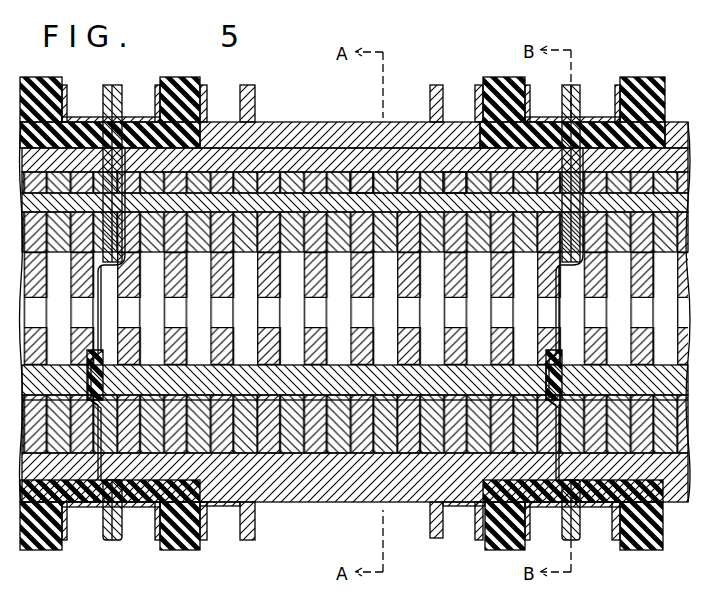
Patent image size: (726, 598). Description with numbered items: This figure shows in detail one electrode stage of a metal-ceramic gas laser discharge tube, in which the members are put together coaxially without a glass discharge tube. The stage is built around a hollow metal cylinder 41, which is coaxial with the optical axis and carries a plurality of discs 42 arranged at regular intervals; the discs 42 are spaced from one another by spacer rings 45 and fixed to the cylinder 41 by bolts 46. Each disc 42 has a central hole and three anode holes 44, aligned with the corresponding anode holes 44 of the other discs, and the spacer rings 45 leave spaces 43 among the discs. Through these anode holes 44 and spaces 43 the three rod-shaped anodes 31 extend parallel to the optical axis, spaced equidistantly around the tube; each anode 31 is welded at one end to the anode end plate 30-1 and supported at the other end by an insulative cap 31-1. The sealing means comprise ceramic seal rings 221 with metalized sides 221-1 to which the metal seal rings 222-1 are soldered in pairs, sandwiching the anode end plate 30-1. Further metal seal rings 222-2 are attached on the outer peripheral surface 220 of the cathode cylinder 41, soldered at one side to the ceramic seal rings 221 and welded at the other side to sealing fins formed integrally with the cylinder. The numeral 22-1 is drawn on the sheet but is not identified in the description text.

The through-hole conductor (via) 22-1 is at (130, 114).
The bolt 46 is at (217, 195).
The hollow metal cylinder 41 is at (360, 126).
The ceramic seal ring 221 is at (505, 80).
The disc 42 is at (305, 233).
The spacer ring 45 is at (355, 232).
The space 43 is at (505, 260).
The anode hole 44 is at (458, 393).
The insulative cap 31-1 is at (563, 372).
The anode end plate 30-1 is at (107, 438).
The rod-shaped anode 31 is at (283, 458).
The metalized side 221-1 is at (167, 527).
The metal seal ring 222-2 is at (227, 523).
The metal seal ring 222-1 is at (253, 523).
The outer peripheral surface 220 is at (353, 504).